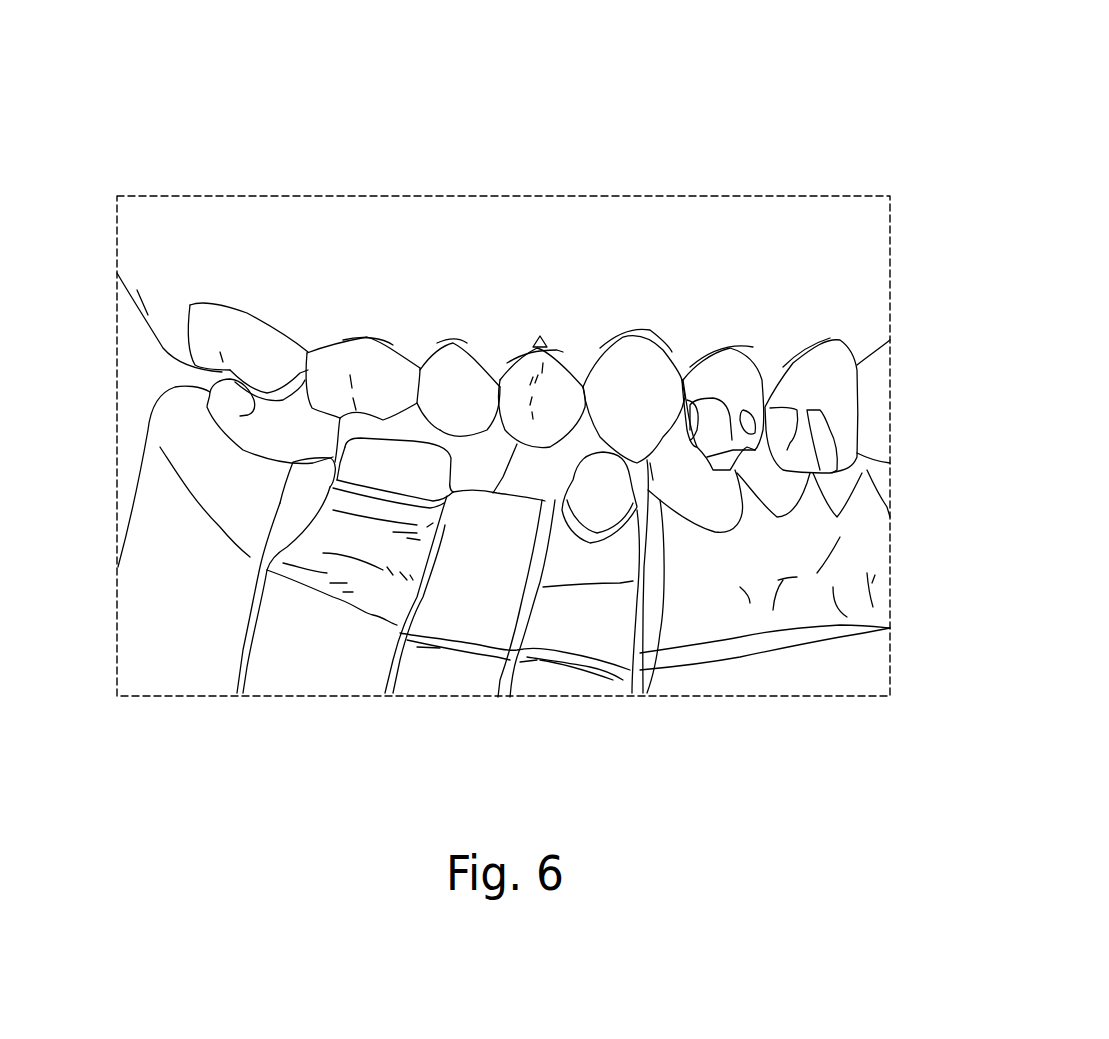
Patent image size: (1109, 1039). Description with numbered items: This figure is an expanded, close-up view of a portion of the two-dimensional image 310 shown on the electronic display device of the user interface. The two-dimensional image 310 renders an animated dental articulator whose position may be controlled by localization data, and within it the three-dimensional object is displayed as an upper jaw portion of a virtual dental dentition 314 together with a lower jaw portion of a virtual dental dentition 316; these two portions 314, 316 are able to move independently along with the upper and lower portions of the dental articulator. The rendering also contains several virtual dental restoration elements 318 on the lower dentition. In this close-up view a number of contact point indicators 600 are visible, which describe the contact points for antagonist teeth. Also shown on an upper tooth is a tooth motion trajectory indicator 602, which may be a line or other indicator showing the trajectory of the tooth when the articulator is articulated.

The two-dimensional image 310 is at (866, 196).
The upper jaw portion of a virtual dental dentition 314 is at (744, 240).
The lower jaw portion of a virtual dental dentition 316 is at (767, 667).
The virtual dental restoration elements 318 is at (632, 713).
The contact point indicators 600 is at (753, 410).
The tooth motion trajectory indicator 602 is at (540, 353).